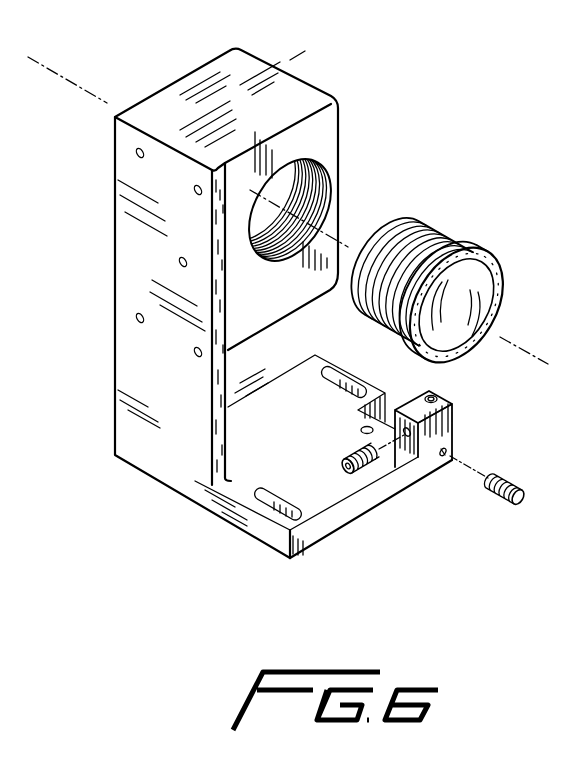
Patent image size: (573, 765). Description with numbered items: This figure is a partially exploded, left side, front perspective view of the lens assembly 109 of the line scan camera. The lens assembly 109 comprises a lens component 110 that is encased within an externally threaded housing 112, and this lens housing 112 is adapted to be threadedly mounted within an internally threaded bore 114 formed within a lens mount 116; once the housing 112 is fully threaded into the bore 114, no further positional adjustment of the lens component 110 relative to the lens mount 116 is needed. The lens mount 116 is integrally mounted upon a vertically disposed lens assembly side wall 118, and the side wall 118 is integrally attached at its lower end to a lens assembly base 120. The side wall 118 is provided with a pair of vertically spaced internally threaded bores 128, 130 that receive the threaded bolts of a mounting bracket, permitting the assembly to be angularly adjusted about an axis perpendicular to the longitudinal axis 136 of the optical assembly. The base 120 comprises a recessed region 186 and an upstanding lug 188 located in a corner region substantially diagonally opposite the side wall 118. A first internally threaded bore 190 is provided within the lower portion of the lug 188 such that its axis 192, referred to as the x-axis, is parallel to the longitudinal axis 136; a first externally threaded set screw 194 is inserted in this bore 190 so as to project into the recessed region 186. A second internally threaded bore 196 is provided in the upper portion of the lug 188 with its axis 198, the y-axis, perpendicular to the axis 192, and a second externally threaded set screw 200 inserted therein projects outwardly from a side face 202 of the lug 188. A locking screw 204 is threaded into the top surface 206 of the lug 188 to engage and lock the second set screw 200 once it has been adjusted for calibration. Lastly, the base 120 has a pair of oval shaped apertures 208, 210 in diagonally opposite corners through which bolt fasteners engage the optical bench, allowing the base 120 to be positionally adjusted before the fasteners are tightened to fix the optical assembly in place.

The lens assembly 109 is at (485, 111).
The lens component 110 is at (484, 272).
The externally threaded housing 112 is at (425, 240).
The internally threaded bore 114 is at (318, 176).
The lens mount 116 is at (322, 116).
The lens assembly side wall 118 is at (162, 373).
The lens assembly base 120 is at (300, 441).
The internally threaded bore 128 is at (140, 153).
The internally threaded bore 130 is at (140, 318).
The longitudinal axis 136 is at (350, 248).
The recessed region 186 is at (395, 405).
The upstanding lug 188 is at (448, 432).
The first internally threaded bore 190 is at (444, 453).
The axis 192 is at (473, 476).
The first externally threaded set screw 194 is at (482, 494).
The second internally threaded bore 196 is at (407, 440).
The axis 198 is at (343, 458).
The second externally threaded set screw 200 is at (350, 483).
The side face 202 is at (437, 398).
The locking screw 204 is at (455, 410).
The top surface 206 is at (470, 322).
The oval shaped aperture 208 is at (322, 370).
The oval shaped aperture 210 is at (268, 497).